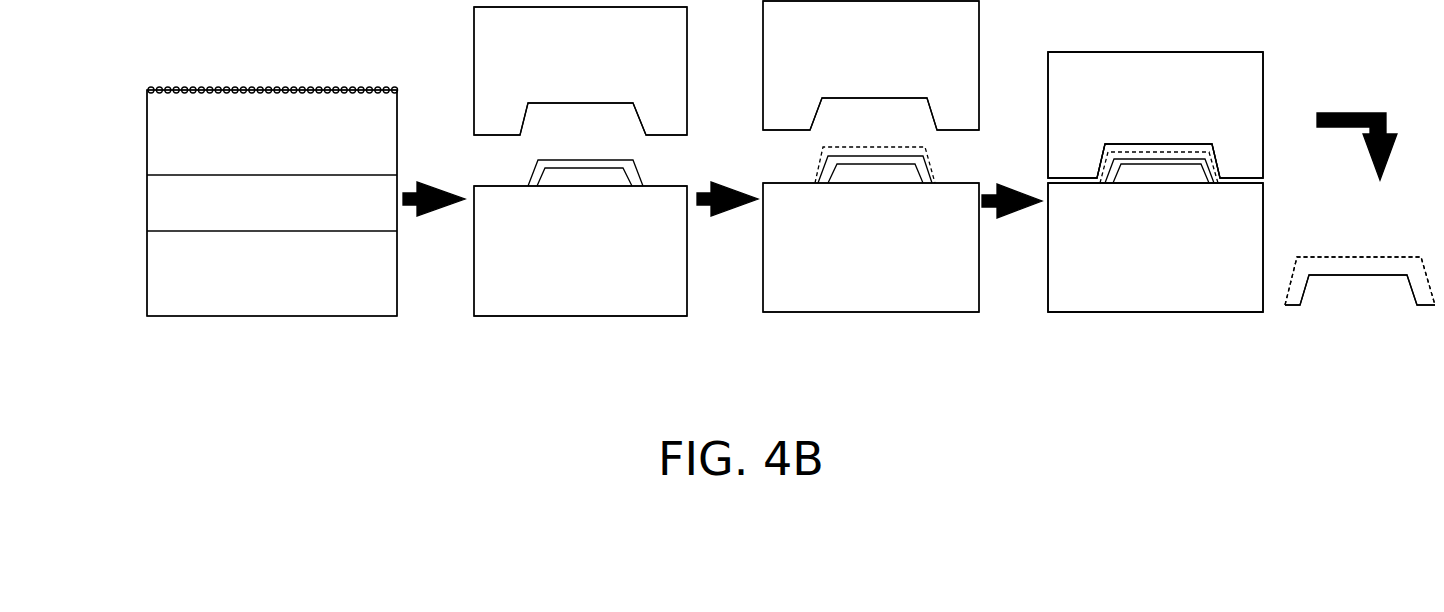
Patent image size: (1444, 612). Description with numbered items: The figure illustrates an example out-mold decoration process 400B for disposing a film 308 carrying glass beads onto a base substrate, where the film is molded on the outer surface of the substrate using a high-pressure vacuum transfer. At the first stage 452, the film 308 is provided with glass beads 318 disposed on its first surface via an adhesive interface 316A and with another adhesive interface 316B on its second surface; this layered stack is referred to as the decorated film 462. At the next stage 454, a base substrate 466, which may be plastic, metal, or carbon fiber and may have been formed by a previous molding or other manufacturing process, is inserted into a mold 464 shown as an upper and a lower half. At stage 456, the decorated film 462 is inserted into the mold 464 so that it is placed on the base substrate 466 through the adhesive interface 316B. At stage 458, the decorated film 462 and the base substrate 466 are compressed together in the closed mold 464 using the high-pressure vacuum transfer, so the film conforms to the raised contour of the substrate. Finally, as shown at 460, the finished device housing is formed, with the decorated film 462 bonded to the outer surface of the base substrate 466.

The glass beads 318 is at (372, 86).
The adhesive interface 316A is at (272, 139).
The film 308 is at (272, 210).
The adhesive interface 316B is at (272, 273).
The decorated film 462 is at (133, 93).
The base substrate 466 is at (641, 168).
The mold 464 is at (868, 158).
The step of providing decorated film 452 is at (272, 205).
The step of inserting base substrate into mold 454 is at (620, 329).
The step of inserting decorated film into mold 456 is at (850, 331).
The step of compressing in mold 458 is at (1137, 340).
The formed device housing 460 is at (1344, 335).
The out-mold decoration process 400B is at (1070, 396).